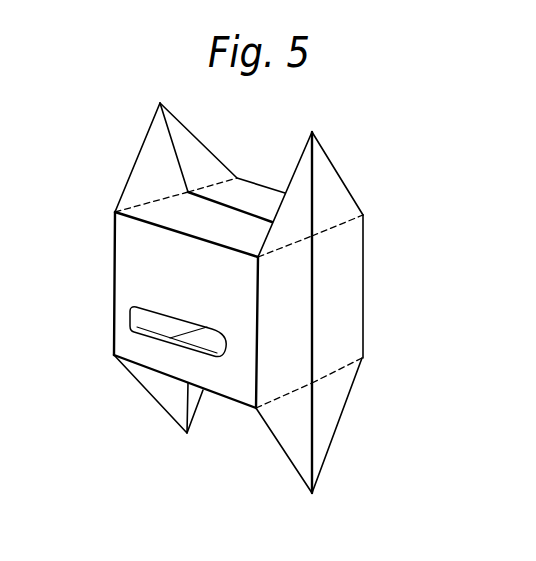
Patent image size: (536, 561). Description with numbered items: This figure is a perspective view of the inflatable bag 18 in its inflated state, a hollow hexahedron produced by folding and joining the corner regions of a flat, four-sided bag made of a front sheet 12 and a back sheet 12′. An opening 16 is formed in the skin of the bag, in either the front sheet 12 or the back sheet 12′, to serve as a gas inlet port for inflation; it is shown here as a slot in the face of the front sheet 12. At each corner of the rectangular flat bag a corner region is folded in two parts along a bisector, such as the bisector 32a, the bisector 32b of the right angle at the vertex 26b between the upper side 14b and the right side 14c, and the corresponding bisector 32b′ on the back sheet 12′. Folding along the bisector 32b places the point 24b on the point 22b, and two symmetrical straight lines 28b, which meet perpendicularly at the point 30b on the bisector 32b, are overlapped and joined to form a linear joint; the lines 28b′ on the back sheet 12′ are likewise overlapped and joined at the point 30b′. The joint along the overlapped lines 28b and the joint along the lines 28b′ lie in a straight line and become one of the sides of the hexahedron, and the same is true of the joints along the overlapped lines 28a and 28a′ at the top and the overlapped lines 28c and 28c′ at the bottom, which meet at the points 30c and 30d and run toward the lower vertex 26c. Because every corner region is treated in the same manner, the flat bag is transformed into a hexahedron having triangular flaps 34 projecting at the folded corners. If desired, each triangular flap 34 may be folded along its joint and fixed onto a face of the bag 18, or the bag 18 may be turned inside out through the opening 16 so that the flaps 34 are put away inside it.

The front sheet 12 is at (122, 272).
The back sheet 12′ is at (363, 258).
The upper side 14b is at (237, 211).
The right side 14c is at (314, 311).
The opening 16 is at (147, 322).
The inflatable bag 18 is at (110, 241).
The point 22b is at (333, 213).
The point 24b is at (330, 193).
The vertex 26b is at (318, 133).
The vertex 26c is at (316, 494).
The overlapped lines 28a is at (180, 198).
The overlapped lines 28a′ is at (205, 187).
The overlapped lines 28b is at (282, 250).
The overlapped lines 28b′ is at (333, 230).
The overlapped lines 28c is at (272, 398).
The overlapped lines 28c′ is at (340, 364).
The point 30b is at (258, 258).
The point 30b′ is at (365, 215).
The point 30c is at (256, 410).
The point 30d is at (364, 358).
The bisector 32a is at (128, 183).
The bisector 32b is at (302, 149).
The bisector 32b′ is at (345, 185).
The triangular flap 34 is at (137, 156).